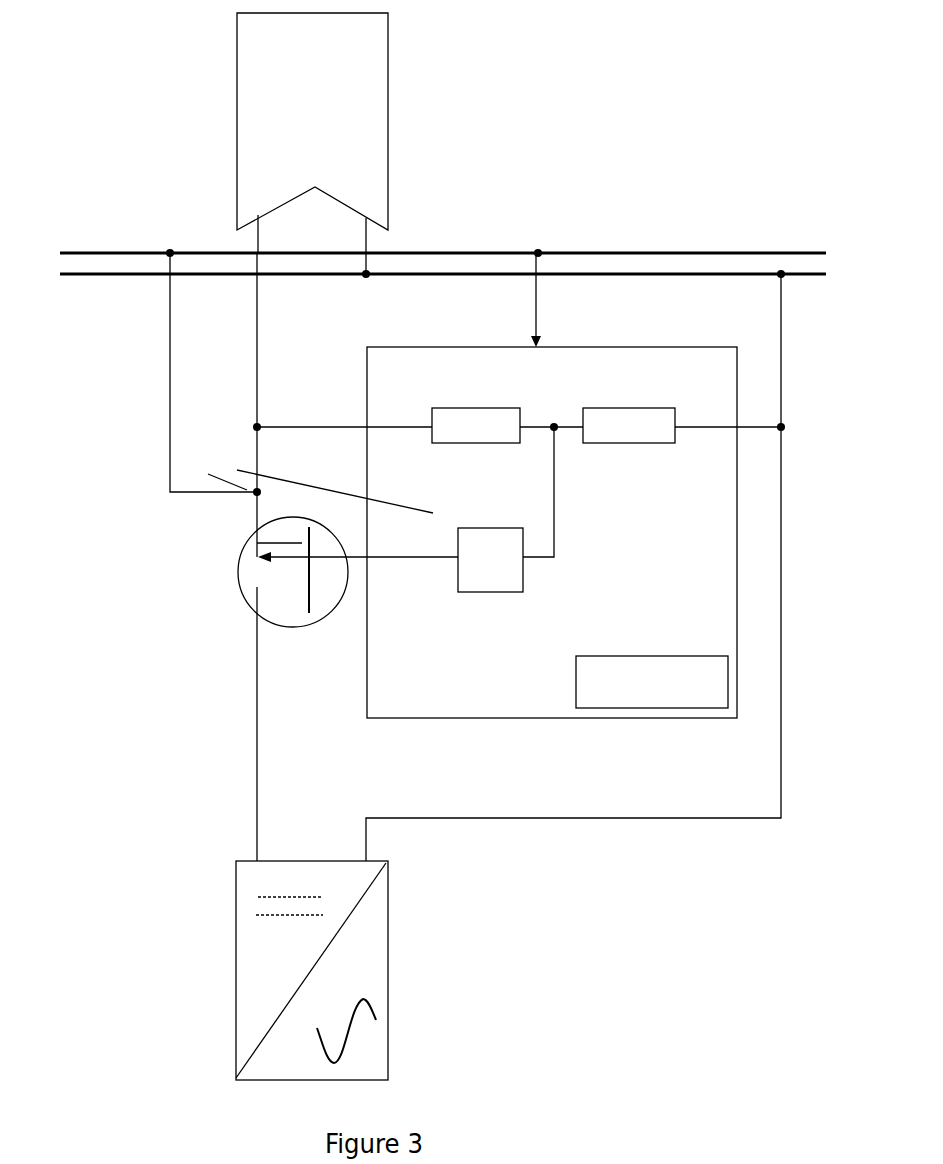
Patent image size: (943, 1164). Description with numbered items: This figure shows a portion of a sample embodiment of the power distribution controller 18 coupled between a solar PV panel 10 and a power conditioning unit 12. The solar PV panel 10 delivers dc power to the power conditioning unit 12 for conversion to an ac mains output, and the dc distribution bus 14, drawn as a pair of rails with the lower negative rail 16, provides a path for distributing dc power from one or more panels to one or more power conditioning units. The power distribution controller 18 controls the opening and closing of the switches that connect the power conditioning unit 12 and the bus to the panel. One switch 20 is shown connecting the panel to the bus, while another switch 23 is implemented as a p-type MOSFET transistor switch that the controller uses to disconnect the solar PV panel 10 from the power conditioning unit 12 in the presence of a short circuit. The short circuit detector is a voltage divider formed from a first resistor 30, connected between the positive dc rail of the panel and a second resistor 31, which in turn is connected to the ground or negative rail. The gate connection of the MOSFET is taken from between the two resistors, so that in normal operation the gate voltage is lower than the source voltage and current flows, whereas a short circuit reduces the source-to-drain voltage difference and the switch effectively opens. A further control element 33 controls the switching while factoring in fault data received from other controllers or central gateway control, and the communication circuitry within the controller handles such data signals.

The solar PV panel 10 is at (237, 120).
The power conditioning unit 12 is at (232, 860).
The dc distribution bus 14 is at (137, 252).
The negative DC bus 16 is at (123, 273).
The power distribution controller 18 is at (498, 347).
The switch S1_1 20 is at (185, 455).
The switch S1_3 (transistor) 23 is at (228, 590).
The resistor R1 30 is at (483, 408).
The resistor R2 31 is at (662, 408).
The enable circuit EN1 33 is at (493, 592).